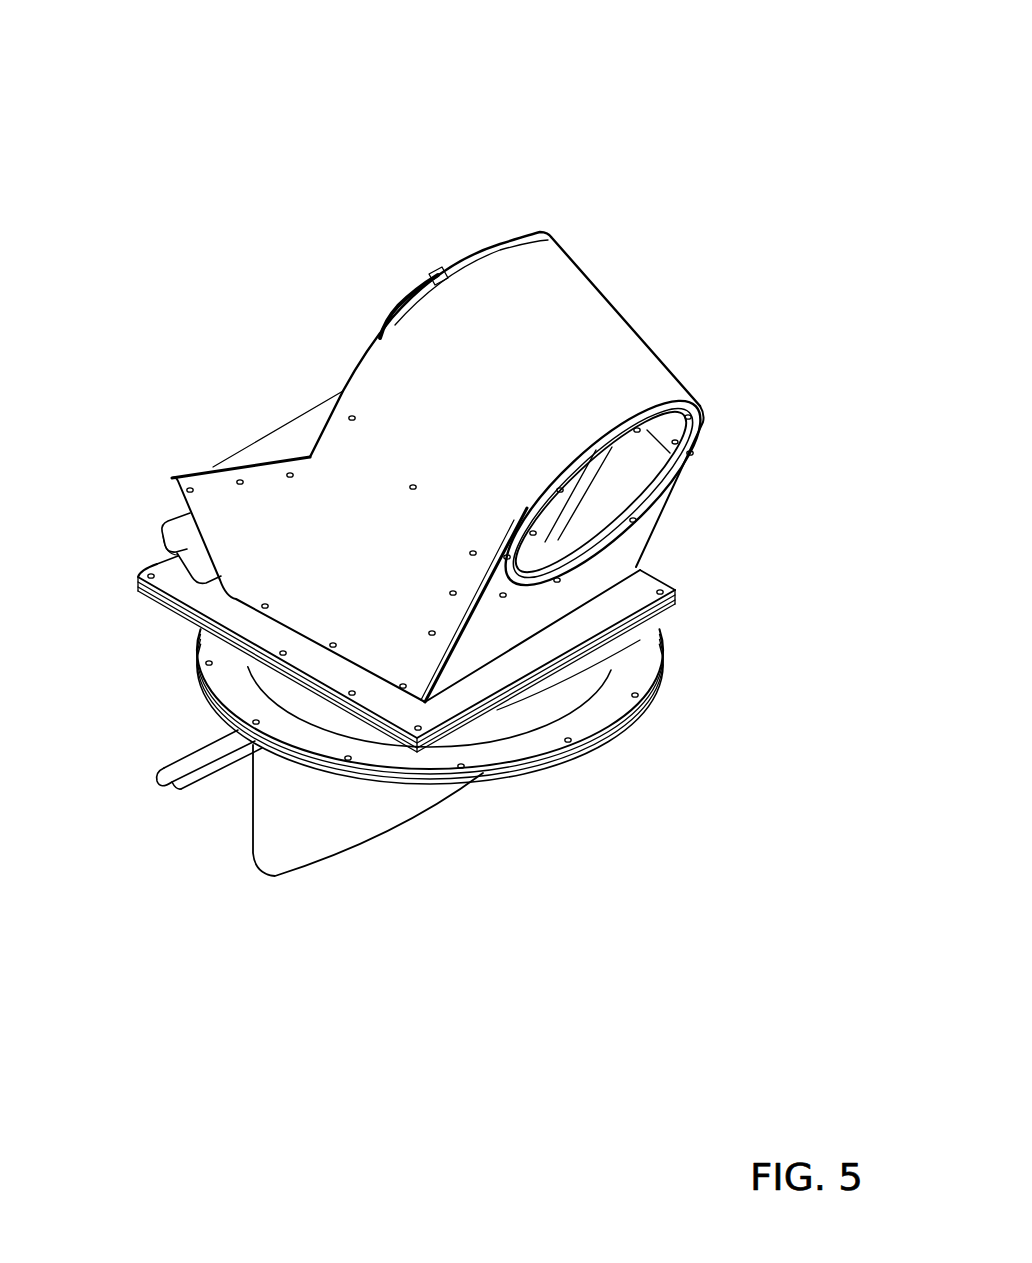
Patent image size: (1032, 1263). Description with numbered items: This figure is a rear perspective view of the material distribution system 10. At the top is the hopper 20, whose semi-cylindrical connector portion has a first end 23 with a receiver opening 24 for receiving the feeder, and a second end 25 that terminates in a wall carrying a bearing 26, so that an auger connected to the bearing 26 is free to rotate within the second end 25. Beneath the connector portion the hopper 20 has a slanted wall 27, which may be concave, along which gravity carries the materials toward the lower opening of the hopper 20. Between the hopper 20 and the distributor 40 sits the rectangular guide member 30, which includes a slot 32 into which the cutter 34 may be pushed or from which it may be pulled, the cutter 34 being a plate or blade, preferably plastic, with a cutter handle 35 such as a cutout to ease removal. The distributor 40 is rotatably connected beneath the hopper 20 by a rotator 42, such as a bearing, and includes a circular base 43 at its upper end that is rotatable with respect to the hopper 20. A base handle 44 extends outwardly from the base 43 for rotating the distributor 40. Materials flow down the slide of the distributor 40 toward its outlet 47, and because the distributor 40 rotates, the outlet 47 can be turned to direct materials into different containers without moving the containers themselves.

The sensor mounting assembly 10 is at (668, 112).
The hopper 20 is at (657, 335).
The first end 23 is at (637, 540).
The receiver opening 24 is at (665, 483).
The second end 25 is at (488, 247).
The bearing 26 is at (403, 295).
The slanted wall 27 is at (555, 546).
The guide member 30 is at (693, 608).
The slot 32 is at (467, 720).
The cutter 34 is at (183, 547).
The cutter handle 35 is at (165, 520).
The distributor 40 is at (389, 849).
The rotator 42 is at (570, 693).
The base 43 is at (537, 760).
The base handle 44 is at (170, 785).
The outlet 47 is at (275, 875).